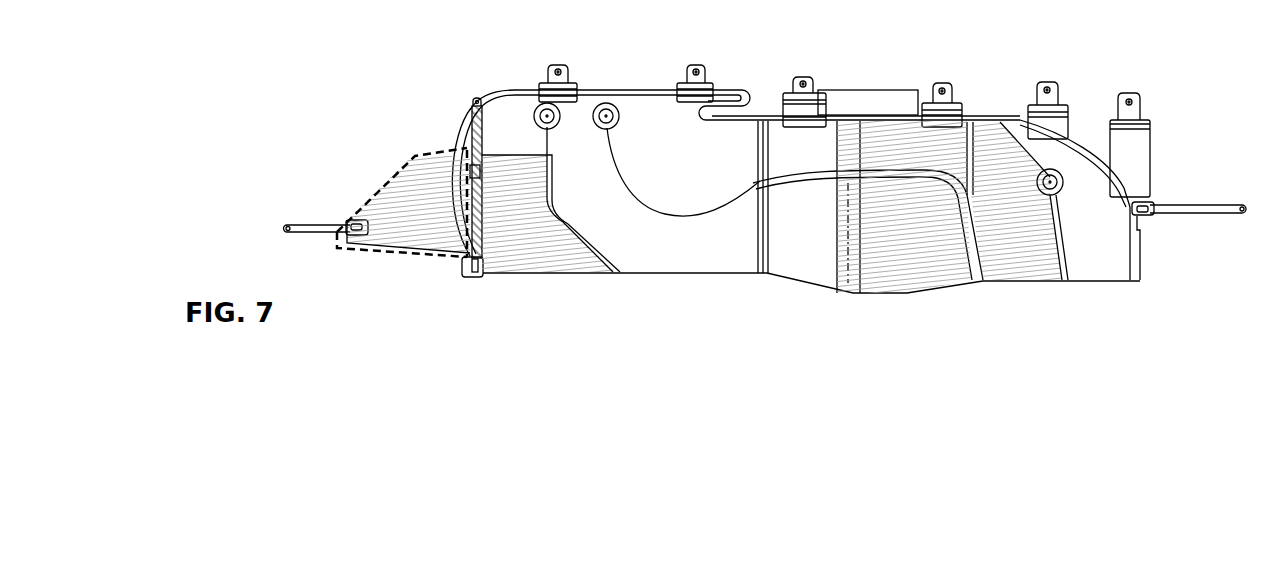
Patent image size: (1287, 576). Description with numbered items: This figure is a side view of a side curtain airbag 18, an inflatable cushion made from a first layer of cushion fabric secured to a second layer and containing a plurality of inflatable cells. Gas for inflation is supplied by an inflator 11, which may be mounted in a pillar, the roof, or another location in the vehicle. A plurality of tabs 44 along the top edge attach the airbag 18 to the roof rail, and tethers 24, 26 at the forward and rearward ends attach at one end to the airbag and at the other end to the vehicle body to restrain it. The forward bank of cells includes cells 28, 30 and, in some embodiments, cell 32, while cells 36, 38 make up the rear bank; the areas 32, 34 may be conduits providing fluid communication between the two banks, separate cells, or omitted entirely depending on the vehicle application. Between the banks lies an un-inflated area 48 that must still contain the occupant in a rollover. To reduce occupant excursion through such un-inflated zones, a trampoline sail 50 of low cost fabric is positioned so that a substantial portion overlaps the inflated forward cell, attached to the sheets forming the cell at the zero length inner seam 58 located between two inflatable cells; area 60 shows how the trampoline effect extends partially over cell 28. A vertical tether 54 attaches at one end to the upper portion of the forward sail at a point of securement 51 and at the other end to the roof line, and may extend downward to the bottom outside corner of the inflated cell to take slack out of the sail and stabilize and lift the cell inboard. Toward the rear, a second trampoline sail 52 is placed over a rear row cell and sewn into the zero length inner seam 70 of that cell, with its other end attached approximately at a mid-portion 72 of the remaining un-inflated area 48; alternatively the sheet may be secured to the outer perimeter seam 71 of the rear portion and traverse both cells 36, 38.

The side curtain airbag 18 is at (1082, 95).
The inflator 11 is at (885, 102).
The tabs 44 is at (561, 75).
The vertical tether 54 is at (471, 108).
The point of securement 51 is at (470, 170).
The tether 24 is at (315, 225).
The trampoline sail 50 is at (427, 223).
The area 60 is at (348, 253).
The cell 28 is at (504, 270).
The zero length inner seam 58 is at (570, 247).
The cell 30 is at (650, 247).
The cell or conduit 32 is at (695, 168).
The cell or conduit 34 is at (823, 163).
The un-inflated area 48 is at (790, 197).
The mid-portion 72 is at (840, 282).
The trampoline sail 52 is at (908, 247).
The cell 36 is at (1020, 248).
The zero length inner seam 70 is at (1053, 196).
The cell 38 is at (1098, 262).
The outer perimeter seam 71 is at (1133, 258).
The tether 26 is at (1187, 205).